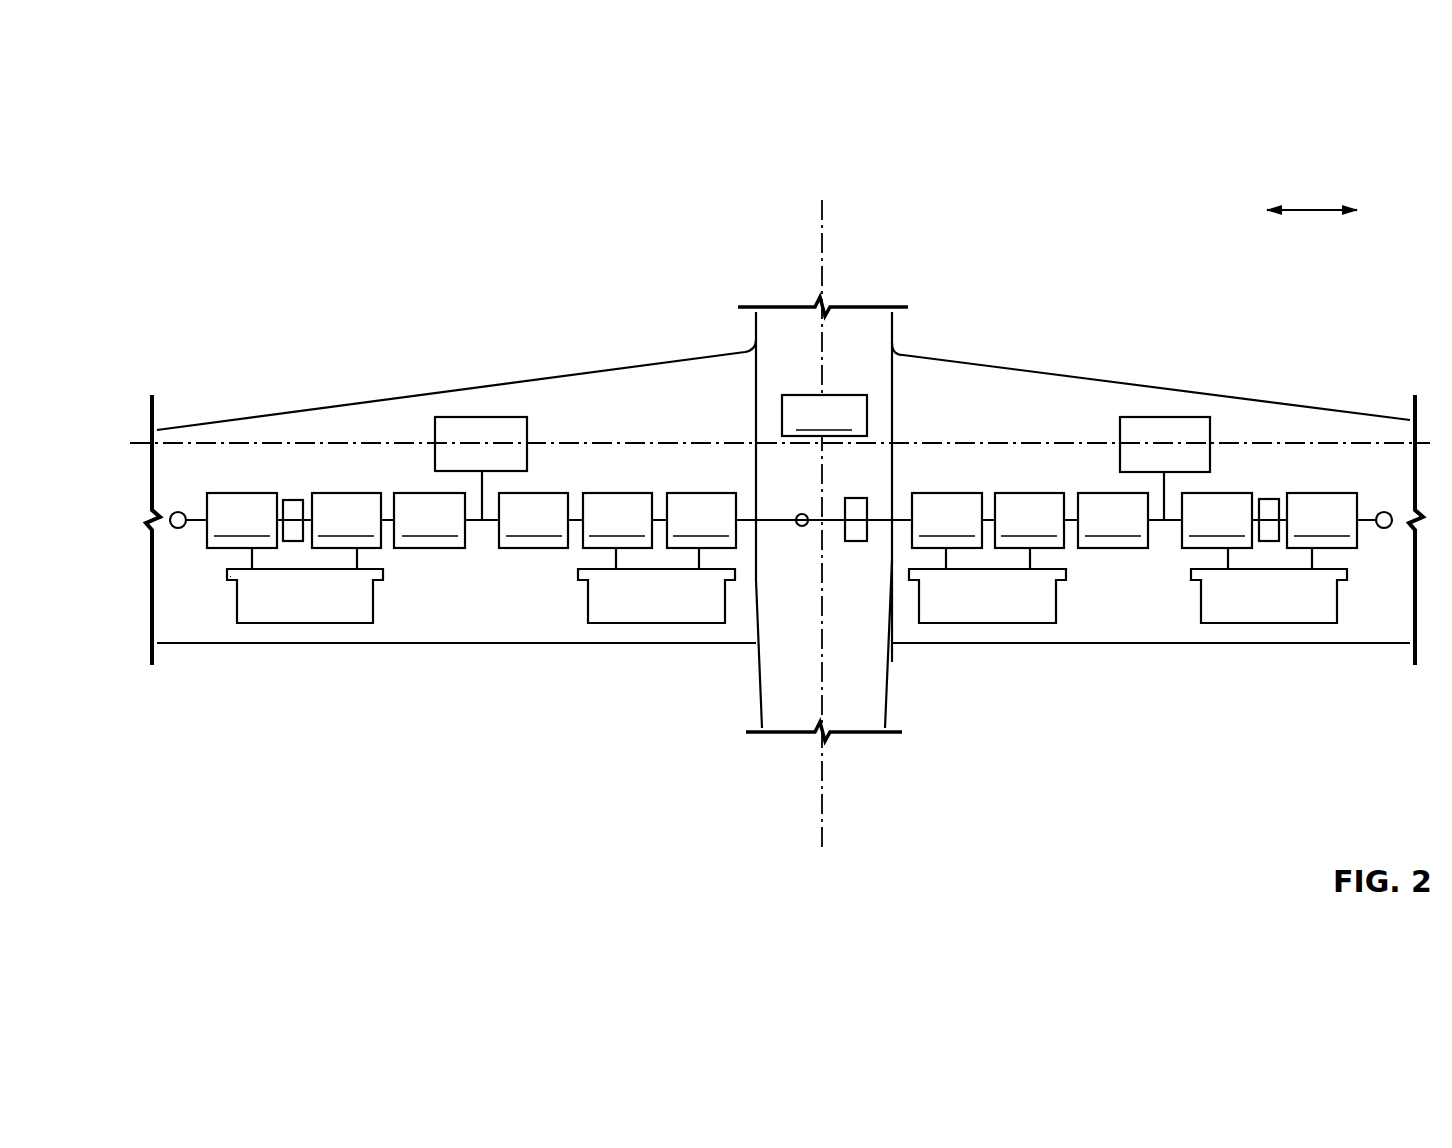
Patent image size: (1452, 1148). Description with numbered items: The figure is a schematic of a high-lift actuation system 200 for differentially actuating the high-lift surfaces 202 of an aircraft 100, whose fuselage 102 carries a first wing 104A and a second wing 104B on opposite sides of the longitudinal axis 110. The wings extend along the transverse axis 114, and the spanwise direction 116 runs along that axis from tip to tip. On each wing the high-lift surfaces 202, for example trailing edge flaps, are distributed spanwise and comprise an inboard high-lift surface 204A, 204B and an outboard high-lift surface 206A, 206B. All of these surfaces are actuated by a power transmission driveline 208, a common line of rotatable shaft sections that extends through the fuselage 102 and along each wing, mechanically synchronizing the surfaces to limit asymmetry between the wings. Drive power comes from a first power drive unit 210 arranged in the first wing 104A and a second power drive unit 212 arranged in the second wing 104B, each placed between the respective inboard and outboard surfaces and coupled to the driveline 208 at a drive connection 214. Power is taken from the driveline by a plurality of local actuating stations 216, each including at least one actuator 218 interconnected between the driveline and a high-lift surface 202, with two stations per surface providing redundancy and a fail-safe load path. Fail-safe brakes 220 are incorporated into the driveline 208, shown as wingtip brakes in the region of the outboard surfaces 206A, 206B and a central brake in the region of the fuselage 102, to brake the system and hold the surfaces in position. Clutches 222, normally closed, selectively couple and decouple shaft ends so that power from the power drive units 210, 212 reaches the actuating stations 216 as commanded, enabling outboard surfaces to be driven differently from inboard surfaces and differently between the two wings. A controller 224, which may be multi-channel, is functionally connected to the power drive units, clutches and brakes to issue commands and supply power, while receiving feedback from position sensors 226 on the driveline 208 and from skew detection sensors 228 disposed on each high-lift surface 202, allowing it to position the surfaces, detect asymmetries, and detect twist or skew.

The aircraft 100 is at (565, 147).
The fuselage 102 is at (755, 341).
The first wing 104A is at (535, 250).
The second wing 104B is at (1093, 252).
The longitudinal axis 110 is at (826, 245).
The transverse axis 114 is at (1430, 443).
The spanwise direction 116 is at (1310, 212).
The high-lift actuation system 200 is at (440, 310).
The high-lift surfaces 202 is at (787, 585).
The inboard high-lift surface 204A is at (585, 618).
The inboard high-lift surface 204B is at (916, 618).
The outboard high-lift surface 206A is at (234, 618).
The outboard high-lift surface 206B is at (1198, 618).
The power transmission driveline 208 is at (892, 660).
The first power drive unit 210 is at (453, 460).
The second power drive unit 212 is at (1137, 460).
The drive connection 214 is at (483, 550).
The local actuating station 216 is at (309, 428).
The actuator 218 is at (214, 536).
The fail-safe brake 220 is at (293, 500).
The clutch 222 is at (402, 536).
The controller 224 is at (796, 430).
The position sensor 226 is at (182, 530).
The skew detection sensor 228 is at (230, 575).